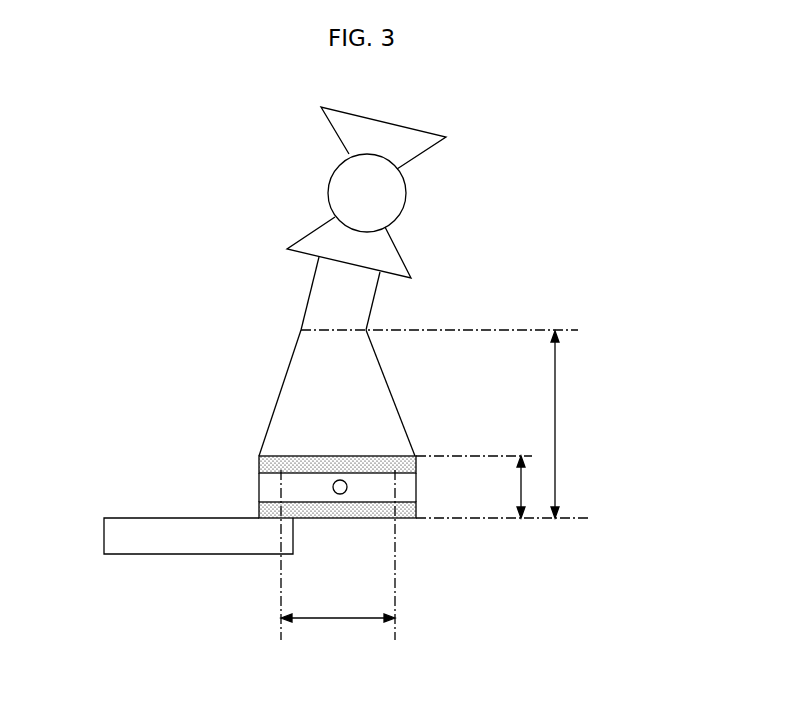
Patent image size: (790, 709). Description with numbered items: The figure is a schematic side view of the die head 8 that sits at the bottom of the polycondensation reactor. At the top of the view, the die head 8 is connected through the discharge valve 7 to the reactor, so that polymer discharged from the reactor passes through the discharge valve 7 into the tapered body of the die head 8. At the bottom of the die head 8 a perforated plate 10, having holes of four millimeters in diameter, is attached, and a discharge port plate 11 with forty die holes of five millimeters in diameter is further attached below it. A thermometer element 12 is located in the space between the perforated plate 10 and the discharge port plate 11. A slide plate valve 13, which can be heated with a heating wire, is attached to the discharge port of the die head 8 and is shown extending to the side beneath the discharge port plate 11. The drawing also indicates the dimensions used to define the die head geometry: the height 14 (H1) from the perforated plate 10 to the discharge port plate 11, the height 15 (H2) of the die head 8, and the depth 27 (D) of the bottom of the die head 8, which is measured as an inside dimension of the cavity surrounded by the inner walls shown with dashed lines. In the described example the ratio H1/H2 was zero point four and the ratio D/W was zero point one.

The discharge valve 7 is at (404, 198).
The die head 8 is at (293, 387).
The perforated plate 10 is at (260, 467).
The discharge port plate 11 is at (259, 508).
The thermometer element 12 is at (347, 481).
The slide plate valve 13 is at (151, 544).
The height (H1) from perforated plate to discharge port plate 14 is at (521, 490).
The height (H2) of die head 15 is at (555, 427).
The depth (D) of die head bottom 27 is at (338, 602).